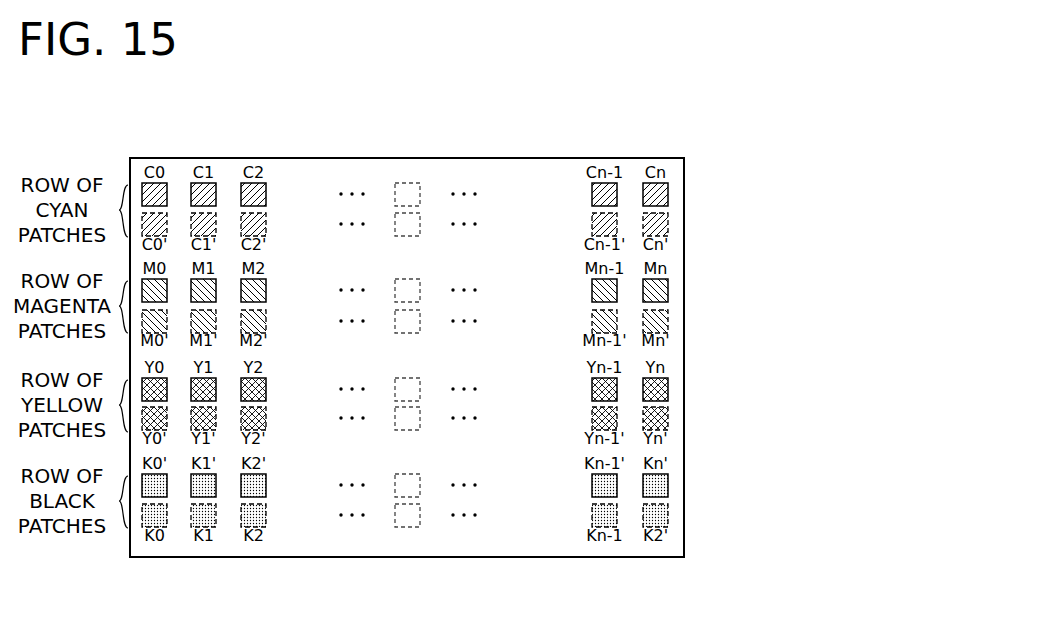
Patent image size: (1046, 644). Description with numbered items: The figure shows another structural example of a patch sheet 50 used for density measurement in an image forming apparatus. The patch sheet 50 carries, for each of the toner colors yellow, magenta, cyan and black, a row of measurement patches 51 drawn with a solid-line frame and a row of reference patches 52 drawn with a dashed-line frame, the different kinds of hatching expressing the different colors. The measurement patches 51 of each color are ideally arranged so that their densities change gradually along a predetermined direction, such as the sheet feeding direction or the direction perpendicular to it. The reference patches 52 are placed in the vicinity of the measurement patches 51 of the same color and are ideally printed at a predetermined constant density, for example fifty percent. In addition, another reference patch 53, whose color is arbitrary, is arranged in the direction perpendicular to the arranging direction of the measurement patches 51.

The patch sheet 50 is at (424, 126).
The measurement patch 51 is at (683, 192).
The reference patch 52 is at (683, 222).
The reference patch 53 is at (407, 528).